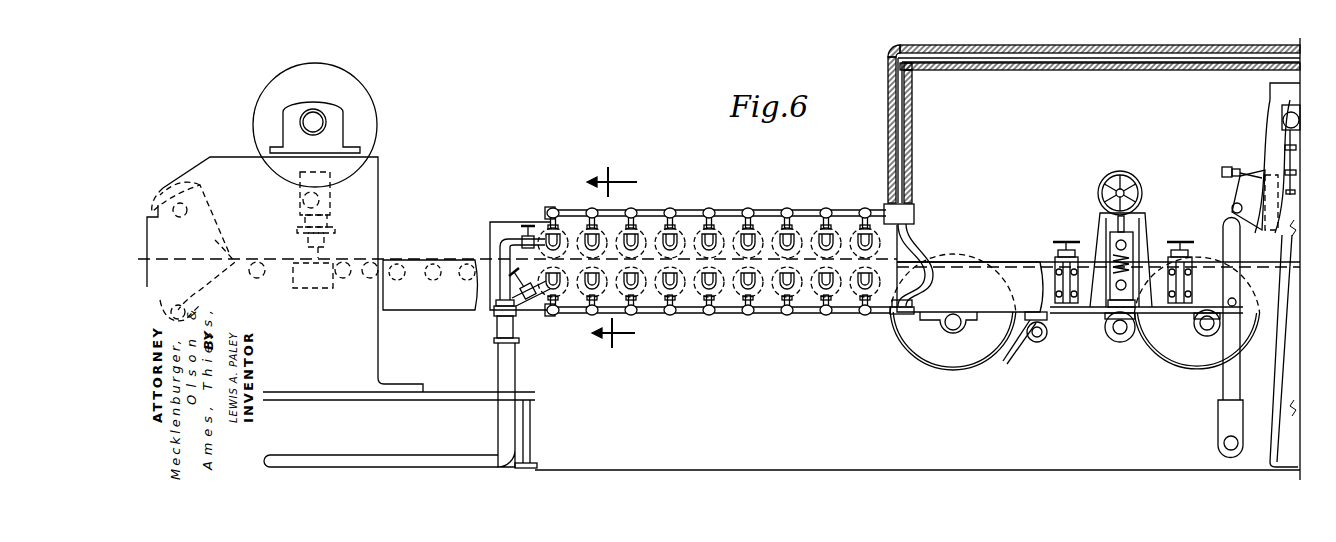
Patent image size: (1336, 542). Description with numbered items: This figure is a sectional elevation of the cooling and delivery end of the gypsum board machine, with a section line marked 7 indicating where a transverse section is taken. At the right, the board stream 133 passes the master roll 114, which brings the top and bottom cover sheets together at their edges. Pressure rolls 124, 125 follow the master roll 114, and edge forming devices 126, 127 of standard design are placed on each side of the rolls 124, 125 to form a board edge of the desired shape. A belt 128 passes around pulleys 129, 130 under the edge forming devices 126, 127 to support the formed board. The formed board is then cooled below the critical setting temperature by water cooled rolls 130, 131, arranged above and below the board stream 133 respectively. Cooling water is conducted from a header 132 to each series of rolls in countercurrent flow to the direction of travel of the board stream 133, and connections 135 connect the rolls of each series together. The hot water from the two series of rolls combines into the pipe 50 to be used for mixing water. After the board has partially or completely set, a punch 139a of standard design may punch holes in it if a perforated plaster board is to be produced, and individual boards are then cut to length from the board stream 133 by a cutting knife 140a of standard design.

The pipe 50 is at (1217, 60).
The master roll 114 is at (1262, 160).
The pressure roll 124 is at (1138, 244).
The pressure roll 125 is at (1100, 315).
The edge forming device 126 is at (1191, 251).
The edge forming device 127 is at (1053, 240).
The belt 128 is at (1016, 341).
The pulley 129 is at (965, 360).
The pulley / water cooled rolls 130 is at (642, 242).
The water cooled rolls 131 is at (655, 293).
The header 132 is at (512, 377).
The board stream 133 is at (966, 261).
The connections 135 is at (729, 211).
The punch 139a is at (320, 252).
The cutting knife 140a is at (200, 168).
The section line 7- 7 is at (610, 261).